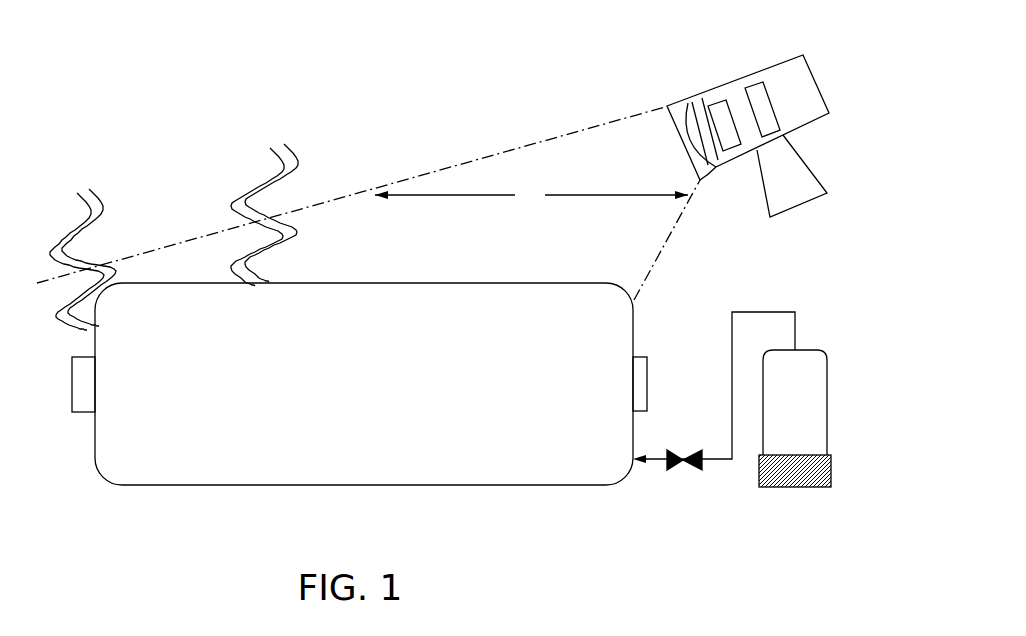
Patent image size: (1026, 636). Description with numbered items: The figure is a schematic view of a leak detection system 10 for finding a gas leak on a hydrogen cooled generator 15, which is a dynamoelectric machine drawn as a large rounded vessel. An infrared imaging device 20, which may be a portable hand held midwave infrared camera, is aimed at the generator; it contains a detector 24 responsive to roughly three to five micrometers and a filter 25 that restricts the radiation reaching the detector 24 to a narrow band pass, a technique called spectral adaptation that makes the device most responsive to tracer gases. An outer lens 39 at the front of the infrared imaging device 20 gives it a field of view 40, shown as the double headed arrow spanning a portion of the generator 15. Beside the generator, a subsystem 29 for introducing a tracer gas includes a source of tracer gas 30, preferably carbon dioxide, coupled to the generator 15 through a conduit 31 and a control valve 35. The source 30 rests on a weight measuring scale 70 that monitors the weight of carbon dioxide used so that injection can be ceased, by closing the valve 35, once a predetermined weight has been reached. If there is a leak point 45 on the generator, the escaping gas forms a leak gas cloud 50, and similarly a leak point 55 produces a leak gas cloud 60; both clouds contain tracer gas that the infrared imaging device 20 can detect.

The leak detection system 10 is at (138, 210).
The hydrogen cooled generator 15 is at (95, 462).
The infrared imaging device 20 is at (733, 113).
The detector 24 is at (753, 85).
The filter 25 is at (717, 100).
The subsystem for introducing a tracer gas 29 is at (740, 285).
The source of tracer gas 30 is at (805, 395).
The conduit 31 is at (762, 310).
The control valve 35 is at (682, 468).
The outer lens 39 is at (682, 103).
The field of view 40 is at (362, 195).
The leak point 45 is at (263, 283).
The leak gas cloud 50 is at (247, 197).
The leak point 55 is at (97, 328).
The leak gas cloud 60 is at (80, 237).
The weight measuring scale 70 is at (797, 488).